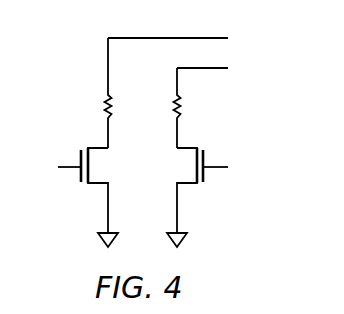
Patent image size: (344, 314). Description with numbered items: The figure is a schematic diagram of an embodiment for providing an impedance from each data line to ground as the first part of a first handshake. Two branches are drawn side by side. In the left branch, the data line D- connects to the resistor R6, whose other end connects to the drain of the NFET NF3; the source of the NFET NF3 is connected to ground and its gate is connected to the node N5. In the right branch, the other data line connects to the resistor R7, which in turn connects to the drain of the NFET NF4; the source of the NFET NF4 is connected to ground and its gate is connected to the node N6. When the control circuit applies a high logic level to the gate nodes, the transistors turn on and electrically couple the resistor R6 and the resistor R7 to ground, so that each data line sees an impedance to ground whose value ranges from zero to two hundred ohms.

The resistor R6 is at (94, 93).
The resistor R7 is at (163, 108).
The NFET NF3 is at (90, 197).
The NFET NF4 is at (194, 197).
The node N5 is at (55, 167).
The node N6 is at (229, 167).
The data line D- is at (185, 38).